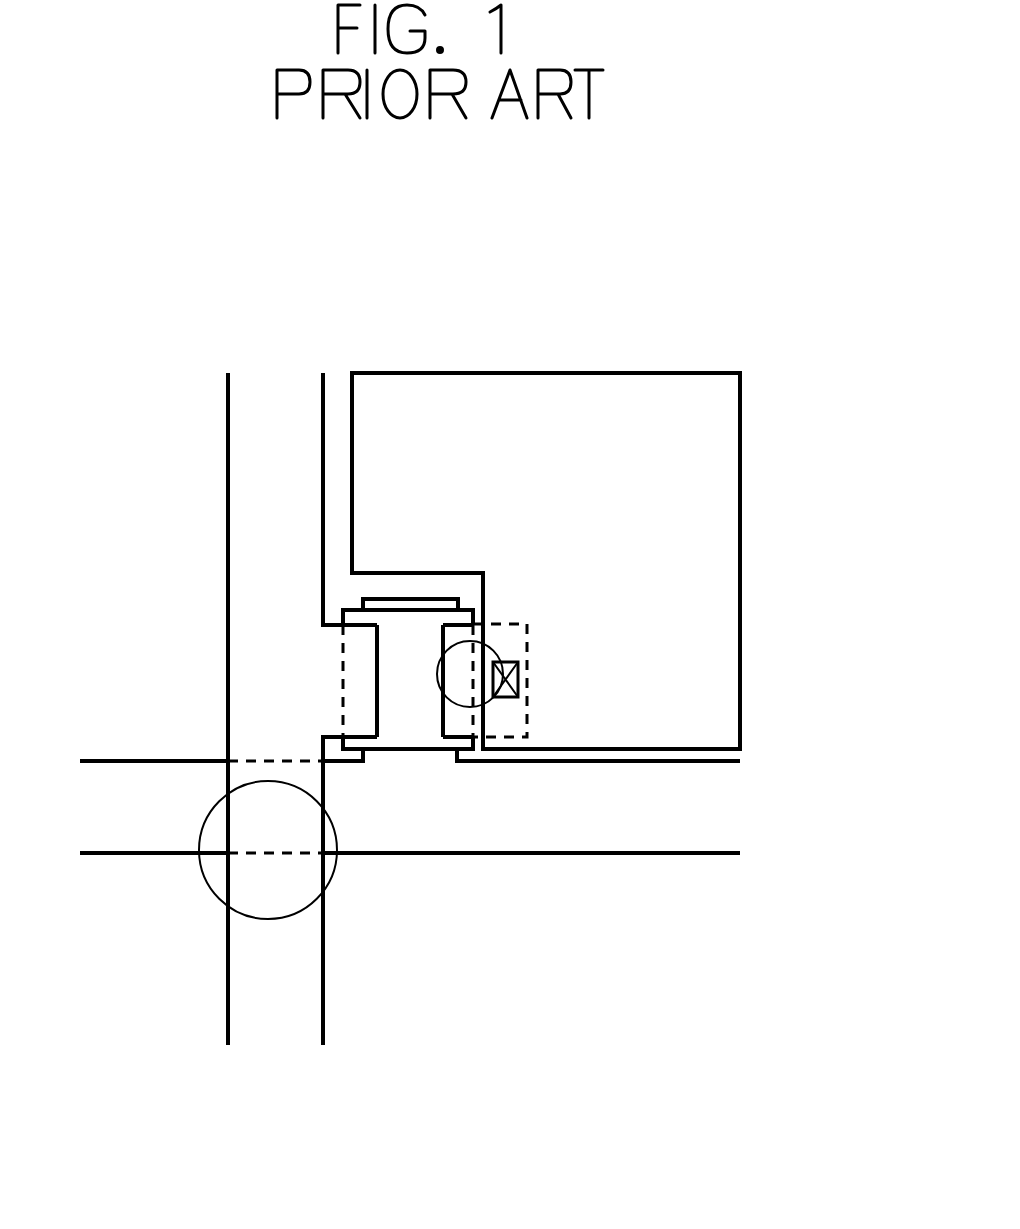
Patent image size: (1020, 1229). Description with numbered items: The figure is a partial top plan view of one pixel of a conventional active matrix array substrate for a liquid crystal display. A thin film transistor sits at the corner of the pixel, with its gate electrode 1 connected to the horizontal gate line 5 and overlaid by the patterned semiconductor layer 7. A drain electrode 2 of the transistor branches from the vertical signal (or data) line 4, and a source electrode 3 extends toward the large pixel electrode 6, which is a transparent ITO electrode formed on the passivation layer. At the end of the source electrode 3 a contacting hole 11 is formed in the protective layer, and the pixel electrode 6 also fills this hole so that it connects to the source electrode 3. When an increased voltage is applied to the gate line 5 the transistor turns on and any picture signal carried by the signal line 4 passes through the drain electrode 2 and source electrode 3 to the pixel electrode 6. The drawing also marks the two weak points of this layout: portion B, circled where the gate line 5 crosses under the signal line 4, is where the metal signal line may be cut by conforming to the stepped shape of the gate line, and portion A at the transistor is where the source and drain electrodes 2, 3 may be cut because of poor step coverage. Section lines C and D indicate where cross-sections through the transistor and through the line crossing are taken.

The gate electrode 1 is at (423, 603).
The drain electrode 2 is at (328, 632).
The source electrode 3 is at (470, 672).
The signal line 4 is at (252, 598).
The gate line 5 is at (490, 833).
The pixel electrode 6 is at (710, 600).
The semiconductor layer 7 is at (405, 718).
The contacting hole 11 is at (515, 660).
The portion A is at (490, 698).
The portion B is at (207, 883).
The section line C- C is at (217, 675).
The section line D- D is at (273, 748).